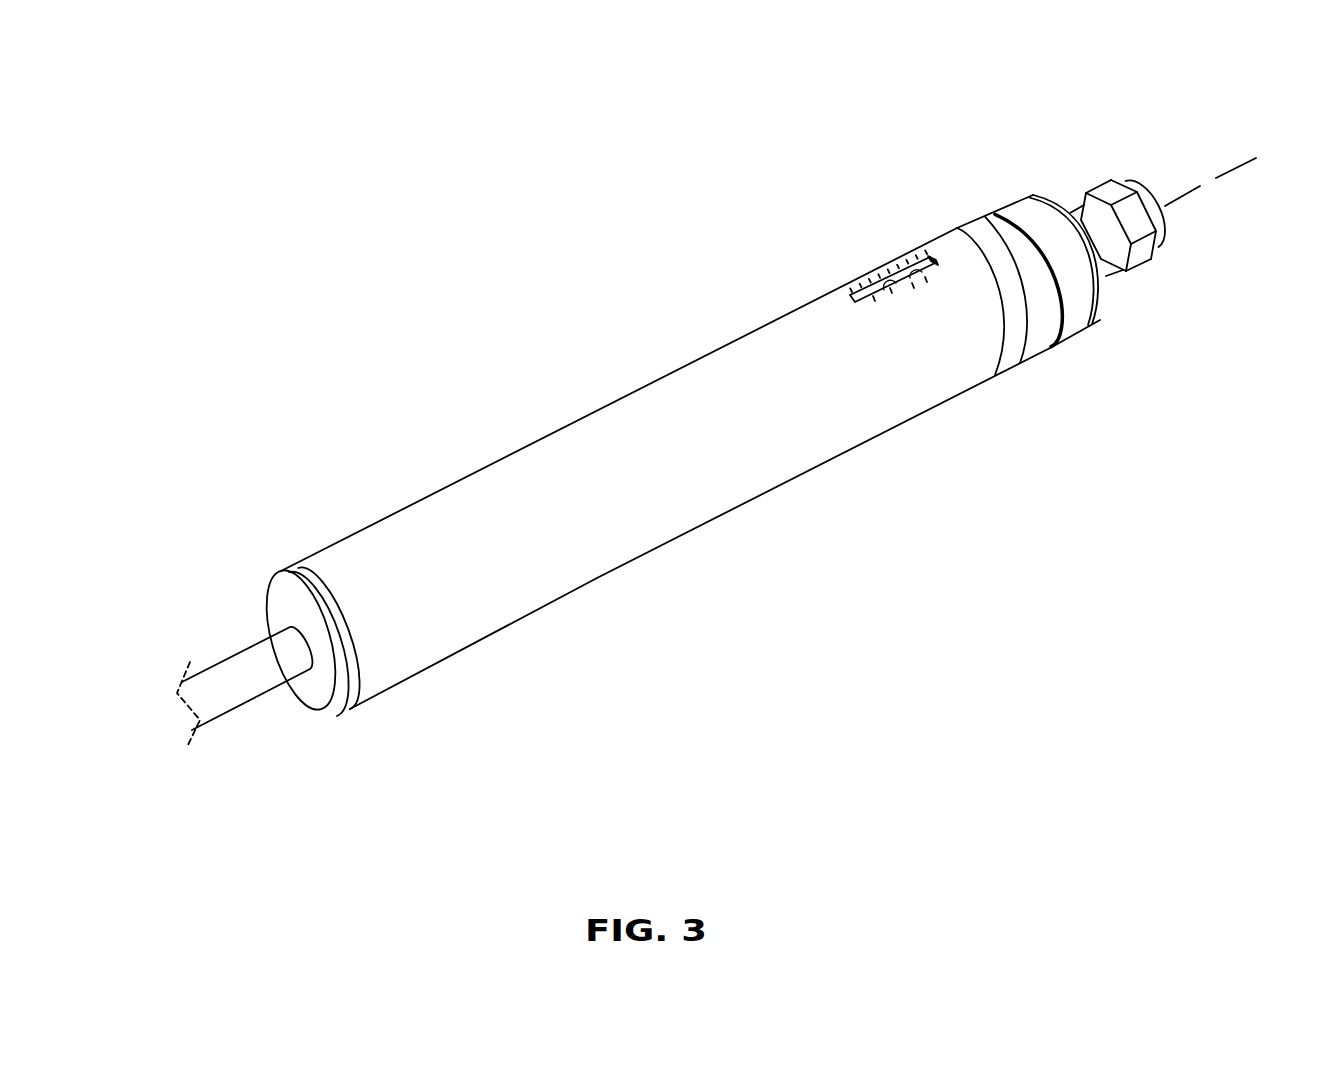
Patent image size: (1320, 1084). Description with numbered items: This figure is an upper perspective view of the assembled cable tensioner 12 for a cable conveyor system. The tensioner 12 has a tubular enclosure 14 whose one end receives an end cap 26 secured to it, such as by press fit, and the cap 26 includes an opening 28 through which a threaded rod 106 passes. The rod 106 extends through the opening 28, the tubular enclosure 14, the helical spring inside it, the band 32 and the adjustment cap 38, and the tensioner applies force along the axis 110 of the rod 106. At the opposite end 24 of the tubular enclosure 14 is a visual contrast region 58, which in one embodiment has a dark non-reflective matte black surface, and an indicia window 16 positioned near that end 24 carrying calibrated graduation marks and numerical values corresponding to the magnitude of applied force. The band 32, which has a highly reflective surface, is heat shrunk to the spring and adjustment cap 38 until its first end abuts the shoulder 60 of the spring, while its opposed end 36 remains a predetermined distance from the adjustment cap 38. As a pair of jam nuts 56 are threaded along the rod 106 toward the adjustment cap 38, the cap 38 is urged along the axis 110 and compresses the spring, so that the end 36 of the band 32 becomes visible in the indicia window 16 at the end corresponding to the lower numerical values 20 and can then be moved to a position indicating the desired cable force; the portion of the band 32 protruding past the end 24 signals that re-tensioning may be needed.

The cable tensioner 12 is at (524, 294).
The tubular enclosure 14 is at (623, 399).
The indicia window 16 is at (850, 297).
The lower numerical values 20 is at (884, 308).
The end of tubular enclosure 24 is at (1030, 337).
The end cap 26 is at (265, 580).
The opening 28 is at (313, 672).
The band 32 is at (970, 223).
The end of band 36 is at (935, 266).
The adjustment cap 38 is at (1083, 327).
The jam nut 56 is at (1074, 209).
The visual contrast region 58 is at (945, 233).
The shoulder of spring 60 is at (991, 216).
The threaded rod 106 is at (250, 647).
The axis of rod 110 is at (1203, 184).